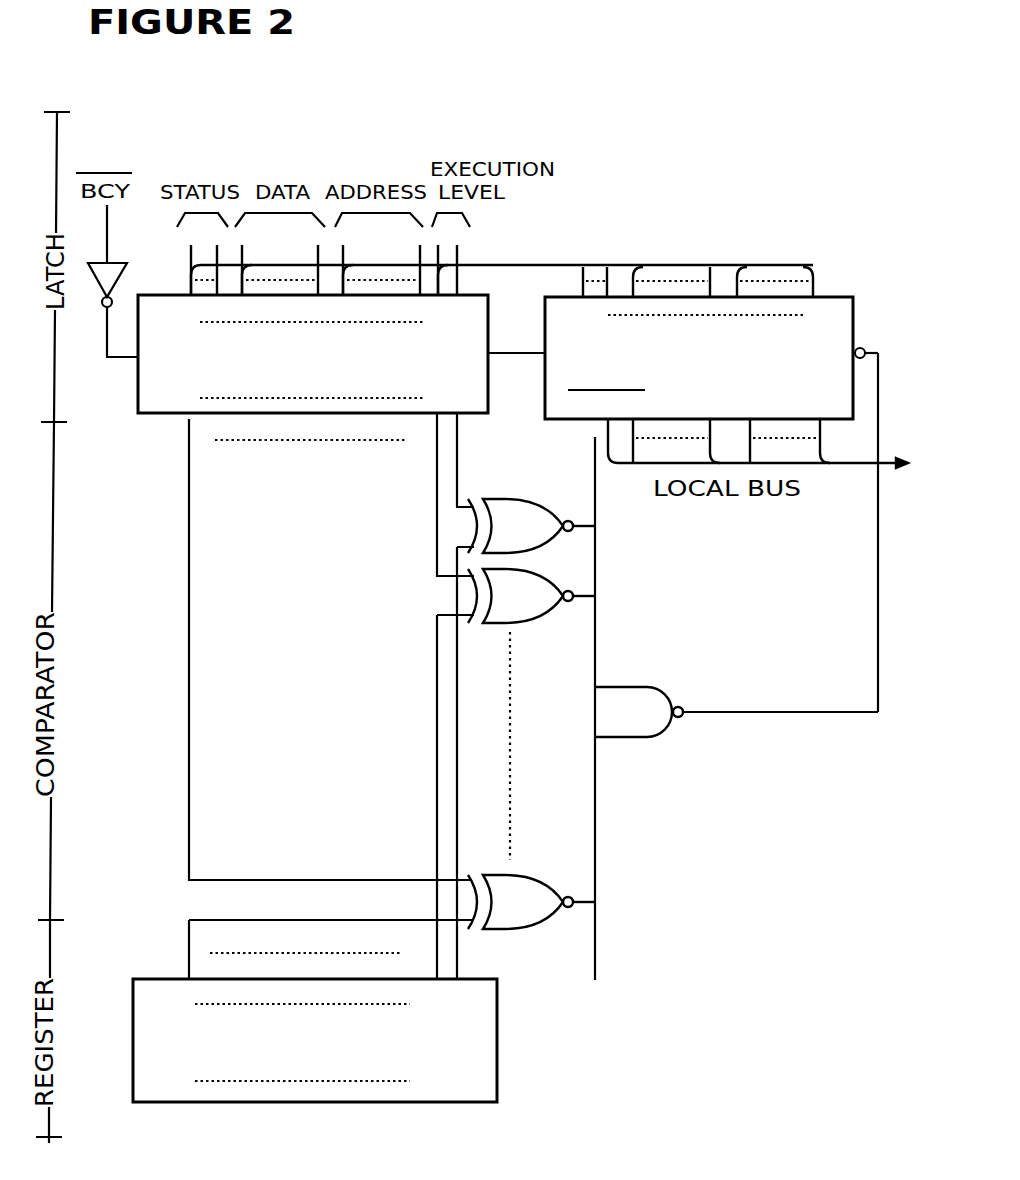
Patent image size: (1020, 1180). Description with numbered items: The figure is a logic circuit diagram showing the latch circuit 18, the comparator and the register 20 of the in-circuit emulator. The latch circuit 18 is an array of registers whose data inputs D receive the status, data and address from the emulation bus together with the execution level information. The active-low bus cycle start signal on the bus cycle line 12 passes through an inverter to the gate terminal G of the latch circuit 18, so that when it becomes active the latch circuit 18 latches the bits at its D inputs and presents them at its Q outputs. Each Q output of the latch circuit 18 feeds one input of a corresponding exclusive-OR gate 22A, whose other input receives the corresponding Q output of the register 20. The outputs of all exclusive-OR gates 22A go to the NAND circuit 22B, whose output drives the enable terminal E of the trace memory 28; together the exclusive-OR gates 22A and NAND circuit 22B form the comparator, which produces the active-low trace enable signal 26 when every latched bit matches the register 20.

The bus cycle line 12 is at (107, 222).
The latch circuit 18 is at (138, 374).
The register 20 is at (497, 1015).
The exclusive-OR gates 22A is at (507, 498).
The NAND circuit 22B is at (640, 685).
The trace enable signal 26 is at (768, 714).
The trace memory 28 is at (832, 297).